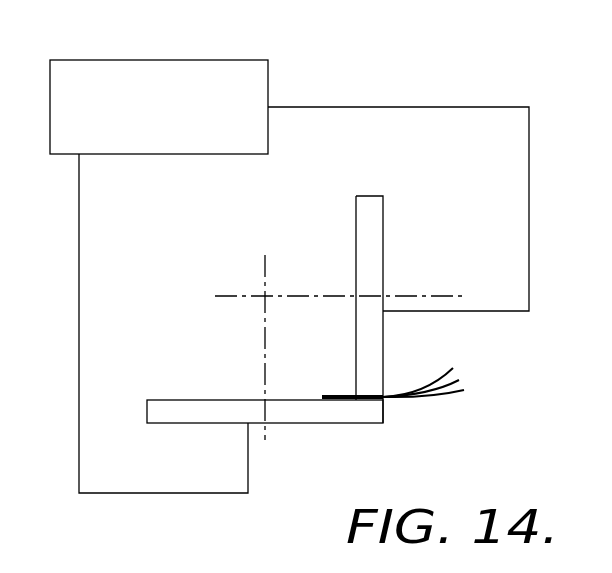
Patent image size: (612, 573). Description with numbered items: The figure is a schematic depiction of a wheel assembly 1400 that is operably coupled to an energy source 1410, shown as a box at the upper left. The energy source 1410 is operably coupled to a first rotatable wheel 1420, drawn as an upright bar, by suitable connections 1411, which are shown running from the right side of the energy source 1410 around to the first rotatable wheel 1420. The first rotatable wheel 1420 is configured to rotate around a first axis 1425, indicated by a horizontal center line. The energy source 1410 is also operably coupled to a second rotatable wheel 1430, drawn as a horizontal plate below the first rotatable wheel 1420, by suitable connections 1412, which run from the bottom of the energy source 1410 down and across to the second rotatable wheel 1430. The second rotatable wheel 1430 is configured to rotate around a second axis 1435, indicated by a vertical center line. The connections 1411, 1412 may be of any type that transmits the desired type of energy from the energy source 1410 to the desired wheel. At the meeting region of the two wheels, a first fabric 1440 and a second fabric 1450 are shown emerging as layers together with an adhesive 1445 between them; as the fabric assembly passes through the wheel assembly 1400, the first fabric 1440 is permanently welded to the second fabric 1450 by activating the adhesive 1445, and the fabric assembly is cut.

The wheel assembly 1400 is at (434, 52).
The energy source 1410 is at (202, 60).
The connections 1411 is at (529, 107).
The connections 1412 is at (79, 373).
The first rotatable wheel 1420 is at (384, 208).
The first axis 1425 is at (426, 293).
The second rotatable wheel 1430 is at (210, 398).
The second axis 1435 is at (270, 435).
The first fabric 1440 is at (438, 371).
The adhesive 1445 is at (468, 387).
The second fabric 1450 is at (439, 401).